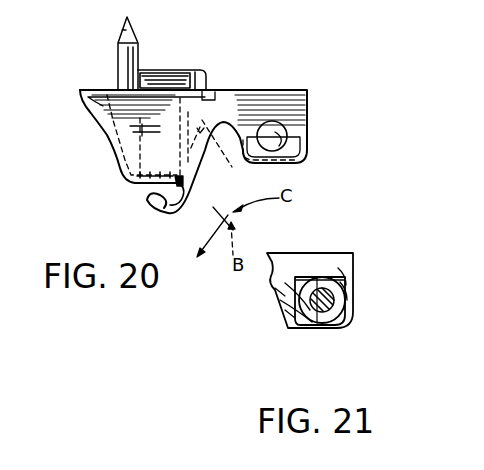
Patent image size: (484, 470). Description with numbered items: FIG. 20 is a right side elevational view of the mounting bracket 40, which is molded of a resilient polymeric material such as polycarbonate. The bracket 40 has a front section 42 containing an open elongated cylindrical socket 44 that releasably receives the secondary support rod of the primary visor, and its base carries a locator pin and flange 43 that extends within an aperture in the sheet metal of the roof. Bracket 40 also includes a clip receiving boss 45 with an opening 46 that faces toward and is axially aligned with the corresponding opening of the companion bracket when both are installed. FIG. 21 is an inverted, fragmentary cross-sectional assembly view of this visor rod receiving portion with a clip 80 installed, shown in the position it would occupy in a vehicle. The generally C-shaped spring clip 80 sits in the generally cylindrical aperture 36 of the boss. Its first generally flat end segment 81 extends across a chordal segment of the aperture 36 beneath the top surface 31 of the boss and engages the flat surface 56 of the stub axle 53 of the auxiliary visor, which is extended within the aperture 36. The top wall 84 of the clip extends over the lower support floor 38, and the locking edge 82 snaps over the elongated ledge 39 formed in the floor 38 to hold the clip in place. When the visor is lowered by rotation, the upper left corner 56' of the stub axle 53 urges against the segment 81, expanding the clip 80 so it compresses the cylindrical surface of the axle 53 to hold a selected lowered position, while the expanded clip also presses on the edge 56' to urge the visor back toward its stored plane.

In FIG. 20, the mounting bracket 40 is at (100, 138).
In FIG. 20, the front section 42 is at (120, 157).
In FIG. 20, the locator pin and flange 43 is at (137, 63).
In FIG. 20, the open elongated cylindrical socket 44 is at (147, 203).
In FIG. 20, the clip receiving boss 45 is at (207, 150).
In FIG. 20, the opening 46 is at (300, 140).
In FIG. 21, the top surface 31 is at (320, 326).
In FIG. 21, the configurated aperture 36 is at (310, 326).
In FIG. 21, the lower support floor 38 is at (318, 276).
In FIG. 21, the elongated ledge 39 is at (275, 292).
In FIG. 21, the stub axle 53 is at (345, 282).
In FIG. 21, the flat surface 56 is at (273, 319).
In FIG. 21, the upper left corner 56' is at (295, 262).
In FIG. 21, the spring mounting clip 80 is at (352, 298).
In FIG. 21, the first generally flat end segment 81 is at (290, 313).
In FIG. 21, the locking edge 82 is at (240, 228).
In FIG. 21, the top wall 84 is at (338, 268).